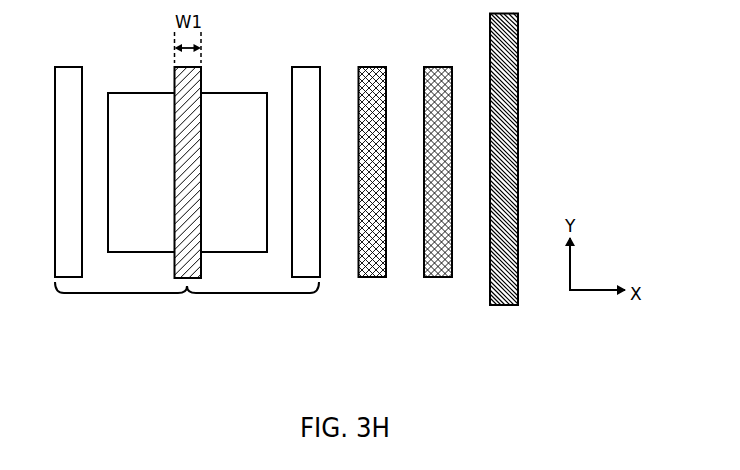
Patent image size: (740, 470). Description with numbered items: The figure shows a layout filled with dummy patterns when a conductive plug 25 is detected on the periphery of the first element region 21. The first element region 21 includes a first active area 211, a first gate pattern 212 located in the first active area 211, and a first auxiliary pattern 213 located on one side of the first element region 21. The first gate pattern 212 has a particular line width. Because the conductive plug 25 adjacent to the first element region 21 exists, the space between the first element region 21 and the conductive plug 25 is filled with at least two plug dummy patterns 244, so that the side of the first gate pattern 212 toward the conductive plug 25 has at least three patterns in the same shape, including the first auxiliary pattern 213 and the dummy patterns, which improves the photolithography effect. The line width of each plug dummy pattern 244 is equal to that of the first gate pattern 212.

The first element region 21 is at (187, 199).
The first active area 211 is at (135, 252).
The first gate pattern 212 is at (201, 127).
The first auxiliary pattern 213 is at (70, 66).
The plug dummy pattern 244 is at (372, 277).
The conductive plug 25 is at (488, 279).